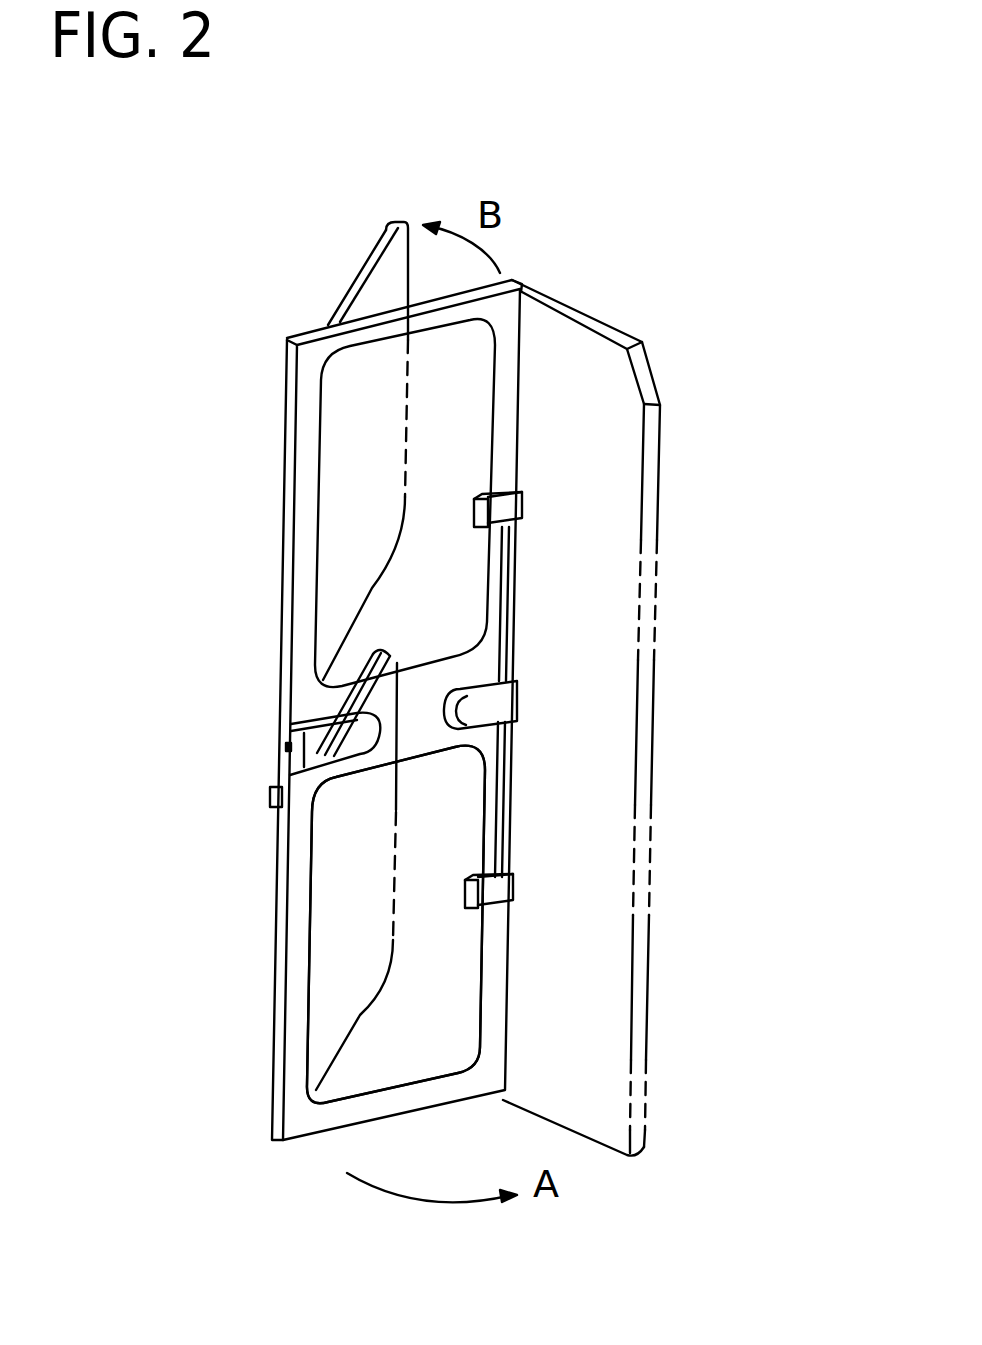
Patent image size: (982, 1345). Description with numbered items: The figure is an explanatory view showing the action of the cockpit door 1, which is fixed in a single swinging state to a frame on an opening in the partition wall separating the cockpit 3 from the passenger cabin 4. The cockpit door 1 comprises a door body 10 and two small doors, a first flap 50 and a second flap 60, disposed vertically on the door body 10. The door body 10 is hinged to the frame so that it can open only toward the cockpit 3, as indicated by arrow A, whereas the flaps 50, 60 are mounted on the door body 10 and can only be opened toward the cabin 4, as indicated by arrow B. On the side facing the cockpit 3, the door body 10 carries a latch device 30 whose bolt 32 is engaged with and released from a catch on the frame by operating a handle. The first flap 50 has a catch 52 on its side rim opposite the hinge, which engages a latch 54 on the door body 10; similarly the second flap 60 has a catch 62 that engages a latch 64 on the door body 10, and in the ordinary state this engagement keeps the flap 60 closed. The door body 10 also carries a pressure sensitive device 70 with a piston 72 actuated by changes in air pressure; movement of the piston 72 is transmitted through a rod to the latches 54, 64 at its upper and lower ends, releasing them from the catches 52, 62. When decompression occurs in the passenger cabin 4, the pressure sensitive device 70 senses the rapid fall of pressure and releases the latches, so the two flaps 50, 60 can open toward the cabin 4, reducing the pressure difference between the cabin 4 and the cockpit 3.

The cockpit door 1 is at (548, 257).
The door body 10 is at (312, 493).
The latch device 30 is at (297, 727).
The bolt 32 is at (286, 747).
The first flap 50 is at (363, 275).
The catch 52 is at (522, 513).
The latch 54 is at (522, 493).
The second flap 60 is at (335, 985).
The catch 62 is at (473, 898).
The latch 64 is at (513, 878).
The pressure sensitive device 70 is at (497, 710).
The piston 72 is at (519, 607).
The cockpit 3 is at (480, 1291).
The passenger cabin 4 is at (230, 944).